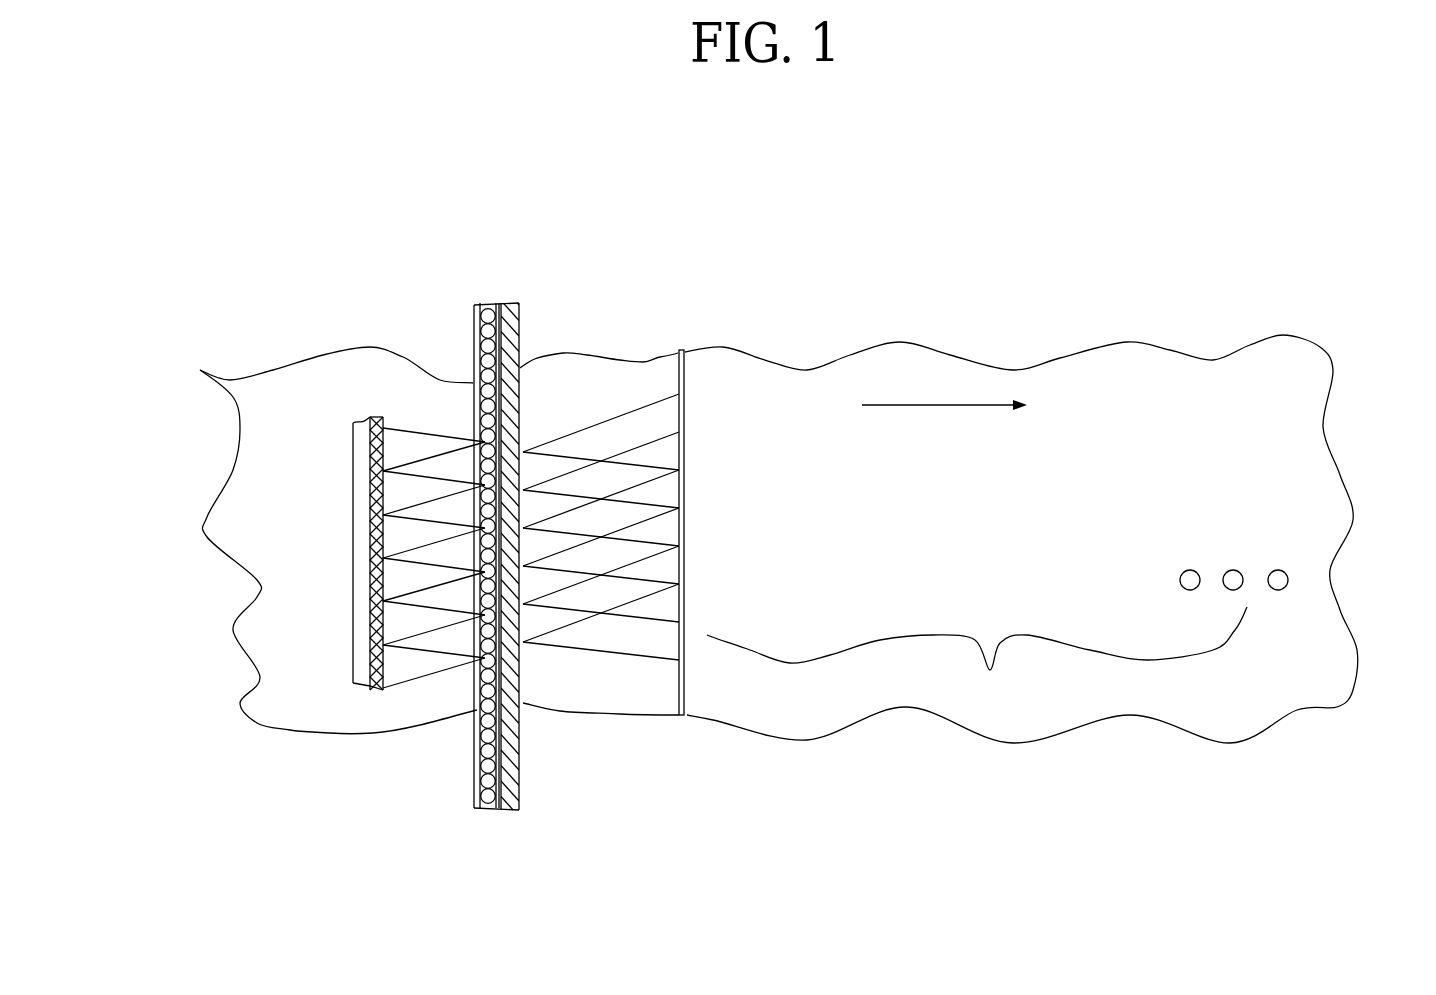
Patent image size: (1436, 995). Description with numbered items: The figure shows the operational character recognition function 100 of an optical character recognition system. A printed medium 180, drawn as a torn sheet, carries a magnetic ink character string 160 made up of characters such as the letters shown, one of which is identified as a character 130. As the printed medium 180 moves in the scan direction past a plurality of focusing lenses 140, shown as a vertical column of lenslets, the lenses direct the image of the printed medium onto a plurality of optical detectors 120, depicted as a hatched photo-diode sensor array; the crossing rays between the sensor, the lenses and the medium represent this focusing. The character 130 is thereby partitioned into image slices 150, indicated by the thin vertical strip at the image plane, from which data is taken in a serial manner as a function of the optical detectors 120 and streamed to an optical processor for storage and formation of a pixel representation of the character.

The operational character recognition function 100 is at (1247, 240).
The plurality of optical detectors 120 is at (370, 699).
The character 130 is at (719, 485).
The plurality of focusing lenses 140 is at (413, 221).
The image slices 150 is at (674, 340).
The magnetic ink character string 160 is at (990, 670).
The printed medium 180 is at (810, 517).